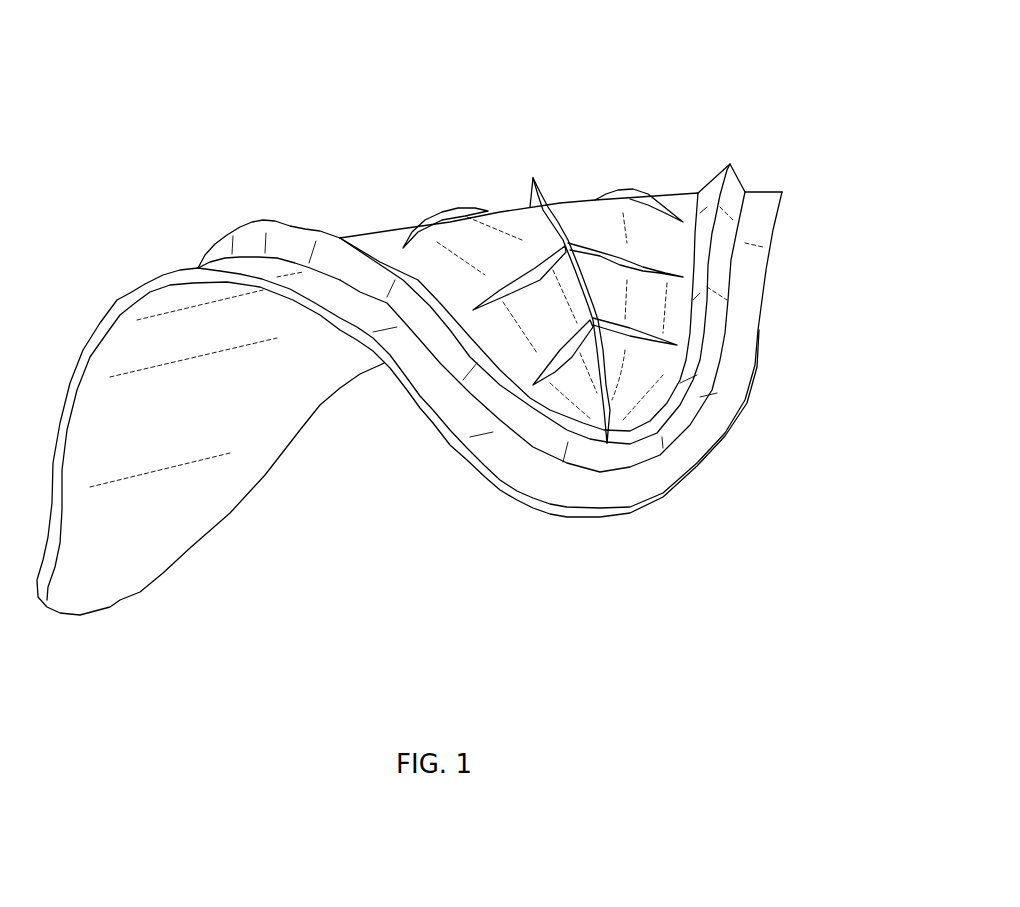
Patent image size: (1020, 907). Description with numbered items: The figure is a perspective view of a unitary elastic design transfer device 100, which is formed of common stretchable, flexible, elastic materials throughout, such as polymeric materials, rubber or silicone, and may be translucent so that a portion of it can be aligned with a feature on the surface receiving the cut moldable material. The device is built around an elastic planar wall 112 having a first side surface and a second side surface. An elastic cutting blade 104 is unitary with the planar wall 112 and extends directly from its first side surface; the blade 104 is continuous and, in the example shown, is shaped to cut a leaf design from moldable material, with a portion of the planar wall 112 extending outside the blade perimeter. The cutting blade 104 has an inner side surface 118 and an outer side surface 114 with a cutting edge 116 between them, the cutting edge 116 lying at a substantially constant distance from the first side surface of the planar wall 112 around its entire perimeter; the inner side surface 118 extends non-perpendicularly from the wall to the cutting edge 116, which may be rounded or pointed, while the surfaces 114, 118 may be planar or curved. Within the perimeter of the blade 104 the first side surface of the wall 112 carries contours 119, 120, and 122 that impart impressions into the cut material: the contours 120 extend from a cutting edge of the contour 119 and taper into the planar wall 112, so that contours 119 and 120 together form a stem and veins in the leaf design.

The design transfer device 100 is at (684, 52).
The elastic cutting blade 104 is at (207, 217).
The elastic planar wall 112 is at (178, 520).
The outer side surface 114 is at (705, 397).
The cutting edge 116 is at (727, 167).
The inner side surface 118 is at (670, 415).
The contour 119 is at (553, 187).
The contours 120 is at (410, 225).
The contour 122 is at (522, 238).